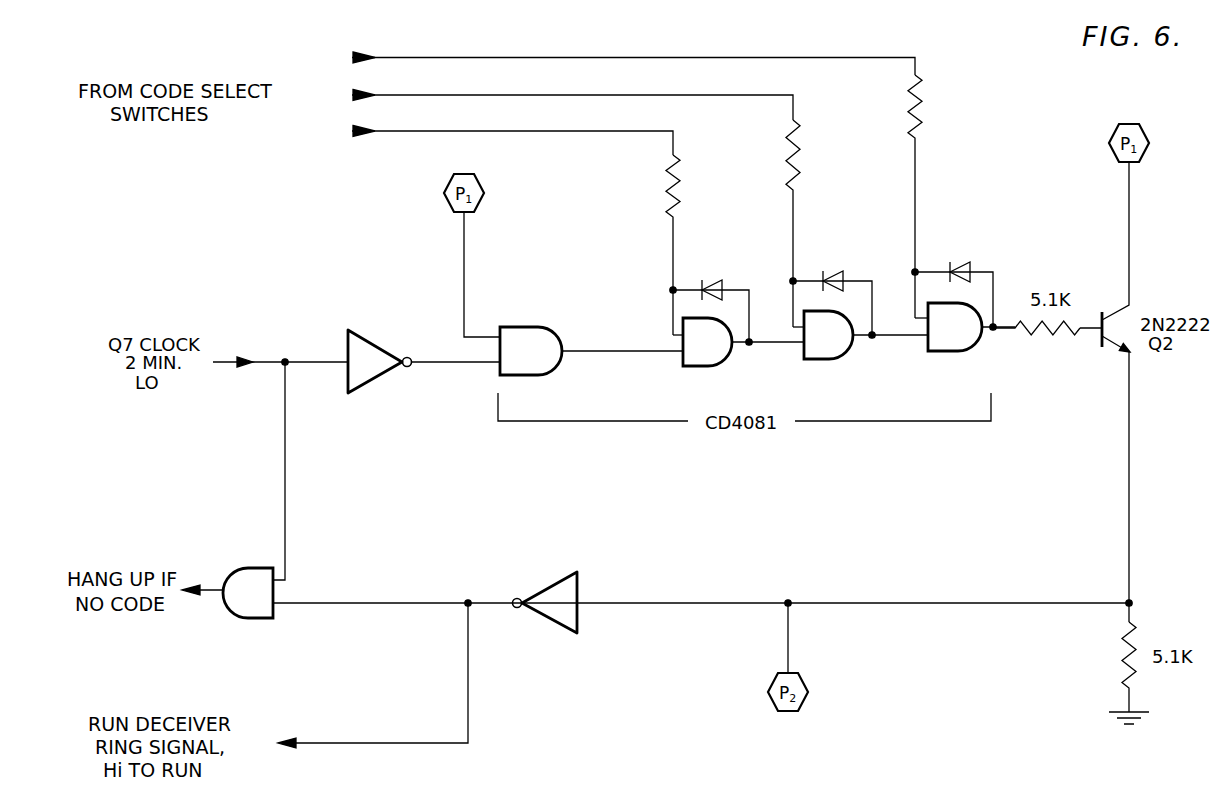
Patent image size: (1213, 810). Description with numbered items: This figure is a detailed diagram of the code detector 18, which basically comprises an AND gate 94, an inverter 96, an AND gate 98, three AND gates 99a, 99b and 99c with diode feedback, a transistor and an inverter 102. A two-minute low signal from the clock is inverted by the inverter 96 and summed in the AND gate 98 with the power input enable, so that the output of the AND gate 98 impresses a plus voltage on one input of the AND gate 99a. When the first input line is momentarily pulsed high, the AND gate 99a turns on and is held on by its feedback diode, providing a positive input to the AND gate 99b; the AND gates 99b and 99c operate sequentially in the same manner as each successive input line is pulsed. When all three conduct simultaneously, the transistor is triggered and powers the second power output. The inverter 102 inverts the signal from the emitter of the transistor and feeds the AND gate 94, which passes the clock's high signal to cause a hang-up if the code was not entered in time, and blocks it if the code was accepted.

The code detector 18 is at (968, 59).
The AND gate 94 is at (256, 568).
The inverter 96 is at (368, 345).
The AND gate 98 is at (530, 327).
The AND gate 99a is at (707, 362).
The AND gate 99b is at (829, 356).
The AND gate 99c is at (956, 349).
The inverter 102 is at (573, 589).